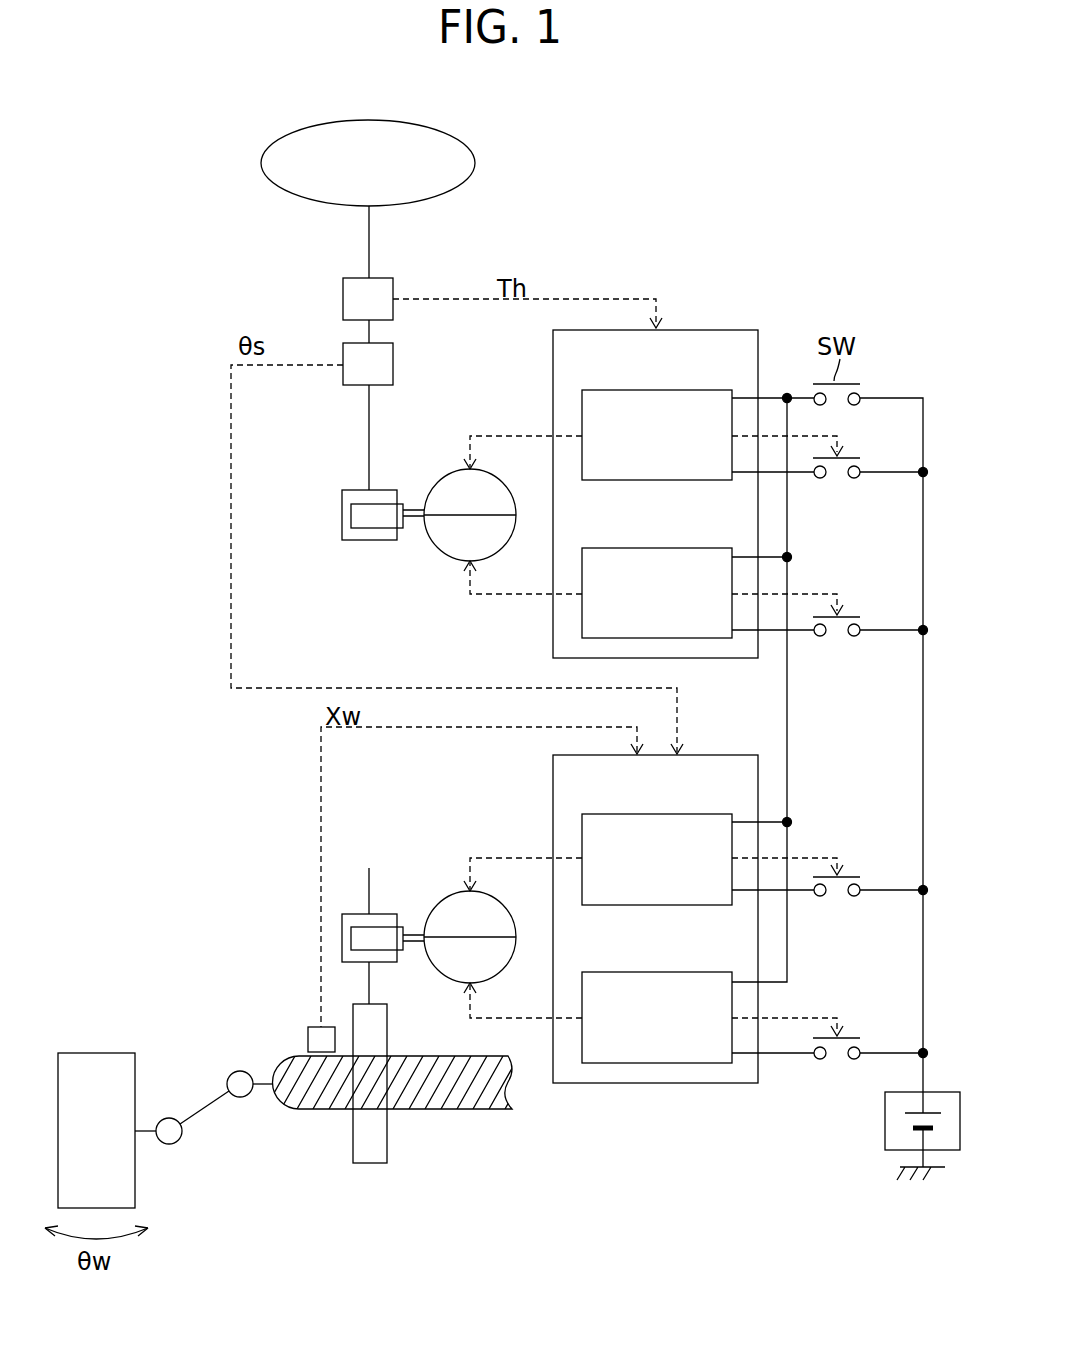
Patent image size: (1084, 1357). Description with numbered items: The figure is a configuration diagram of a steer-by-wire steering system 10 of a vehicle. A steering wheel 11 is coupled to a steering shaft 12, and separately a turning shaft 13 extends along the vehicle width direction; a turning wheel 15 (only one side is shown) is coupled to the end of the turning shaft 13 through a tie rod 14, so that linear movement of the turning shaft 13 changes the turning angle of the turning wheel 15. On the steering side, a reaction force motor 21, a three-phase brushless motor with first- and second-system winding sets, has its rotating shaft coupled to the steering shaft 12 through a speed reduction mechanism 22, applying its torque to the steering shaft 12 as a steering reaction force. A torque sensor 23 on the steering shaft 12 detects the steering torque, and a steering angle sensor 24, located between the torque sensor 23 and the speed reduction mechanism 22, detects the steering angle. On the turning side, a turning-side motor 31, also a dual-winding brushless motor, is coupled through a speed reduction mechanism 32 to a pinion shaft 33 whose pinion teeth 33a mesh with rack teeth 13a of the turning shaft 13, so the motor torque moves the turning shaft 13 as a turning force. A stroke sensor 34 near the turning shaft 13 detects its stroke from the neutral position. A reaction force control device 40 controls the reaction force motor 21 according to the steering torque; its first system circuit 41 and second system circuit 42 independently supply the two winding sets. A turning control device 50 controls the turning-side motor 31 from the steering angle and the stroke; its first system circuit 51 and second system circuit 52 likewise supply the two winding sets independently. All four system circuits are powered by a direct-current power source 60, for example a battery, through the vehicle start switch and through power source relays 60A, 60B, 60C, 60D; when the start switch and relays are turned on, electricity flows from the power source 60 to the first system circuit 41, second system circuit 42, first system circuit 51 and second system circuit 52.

The steering system 10 is at (208, 311).
The steering wheel 11 is at (262, 165).
The steering shaft 12 is at (369, 243).
The turning shaft 13 is at (463, 1111).
The rack teeth 13a is at (427, 1097).
The tie rod 14 is at (196, 1104).
The turning wheel 15 is at (96, 1053).
The reaction force motor 21 is at (442, 479).
The speed reduction mechanism 22 is at (336, 544).
The torque sensor 23 is at (343, 300).
The steering angle sensor 24 is at (357, 385).
The turning-side motor 31 is at (443, 910).
The speed reduction mechanism 32 is at (388, 893).
The pinion shaft 33 is at (371, 985).
The pinion teeth 33a is at (378, 1027).
The stroke sensor 34 is at (312, 1027).
The reaction force control device 40 is at (718, 330).
The first system circuit 41 is at (684, 480).
The second system circuit 42 is at (618, 548).
The turning control device 50 is at (718, 755).
The first system circuit 51 is at (684, 905).
The second system circuit 52 is at (618, 972).
The direct-current power source 60 is at (883, 1119).
The power source relay 60A is at (848, 456).
The power source relay 60B is at (848, 613).
The power source relay 60C is at (848, 871).
The power source relay 60D is at (848, 1034).